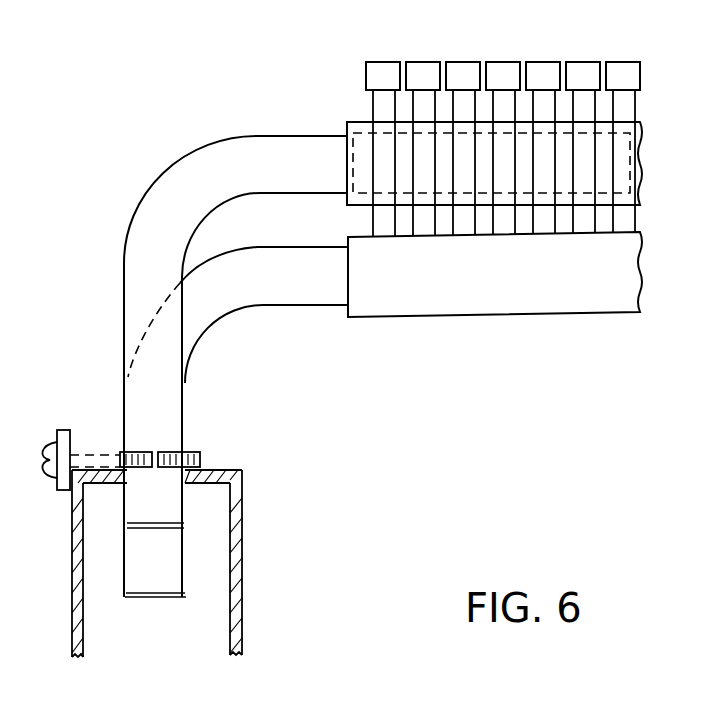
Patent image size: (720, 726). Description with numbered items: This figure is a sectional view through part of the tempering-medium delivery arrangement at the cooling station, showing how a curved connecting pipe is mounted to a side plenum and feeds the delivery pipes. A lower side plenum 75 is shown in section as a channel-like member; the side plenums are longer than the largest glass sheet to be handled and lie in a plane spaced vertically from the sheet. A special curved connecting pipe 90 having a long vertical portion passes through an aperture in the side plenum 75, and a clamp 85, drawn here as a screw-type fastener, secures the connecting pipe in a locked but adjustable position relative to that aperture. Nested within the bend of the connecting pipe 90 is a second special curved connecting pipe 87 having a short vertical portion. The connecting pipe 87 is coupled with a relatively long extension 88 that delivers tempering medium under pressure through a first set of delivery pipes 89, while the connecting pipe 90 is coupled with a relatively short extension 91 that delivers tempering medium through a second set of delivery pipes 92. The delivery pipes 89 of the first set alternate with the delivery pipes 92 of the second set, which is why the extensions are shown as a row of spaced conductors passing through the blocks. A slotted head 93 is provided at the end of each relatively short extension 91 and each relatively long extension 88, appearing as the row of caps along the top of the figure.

The lower side plenum 75 is at (243, 538).
The clamp 85 is at (70, 432).
The curved connecting pipe 87 is at (215, 327).
The relatively long extension 88 is at (362, 226).
The delivery pipe 89 is at (420, 317).
The curved connecting pipe 90 is at (183, 165).
The relatively short extension 91 is at (370, 108).
The delivery pipe 92 is at (347, 124).
The slotted head 93 is at (380, 60).